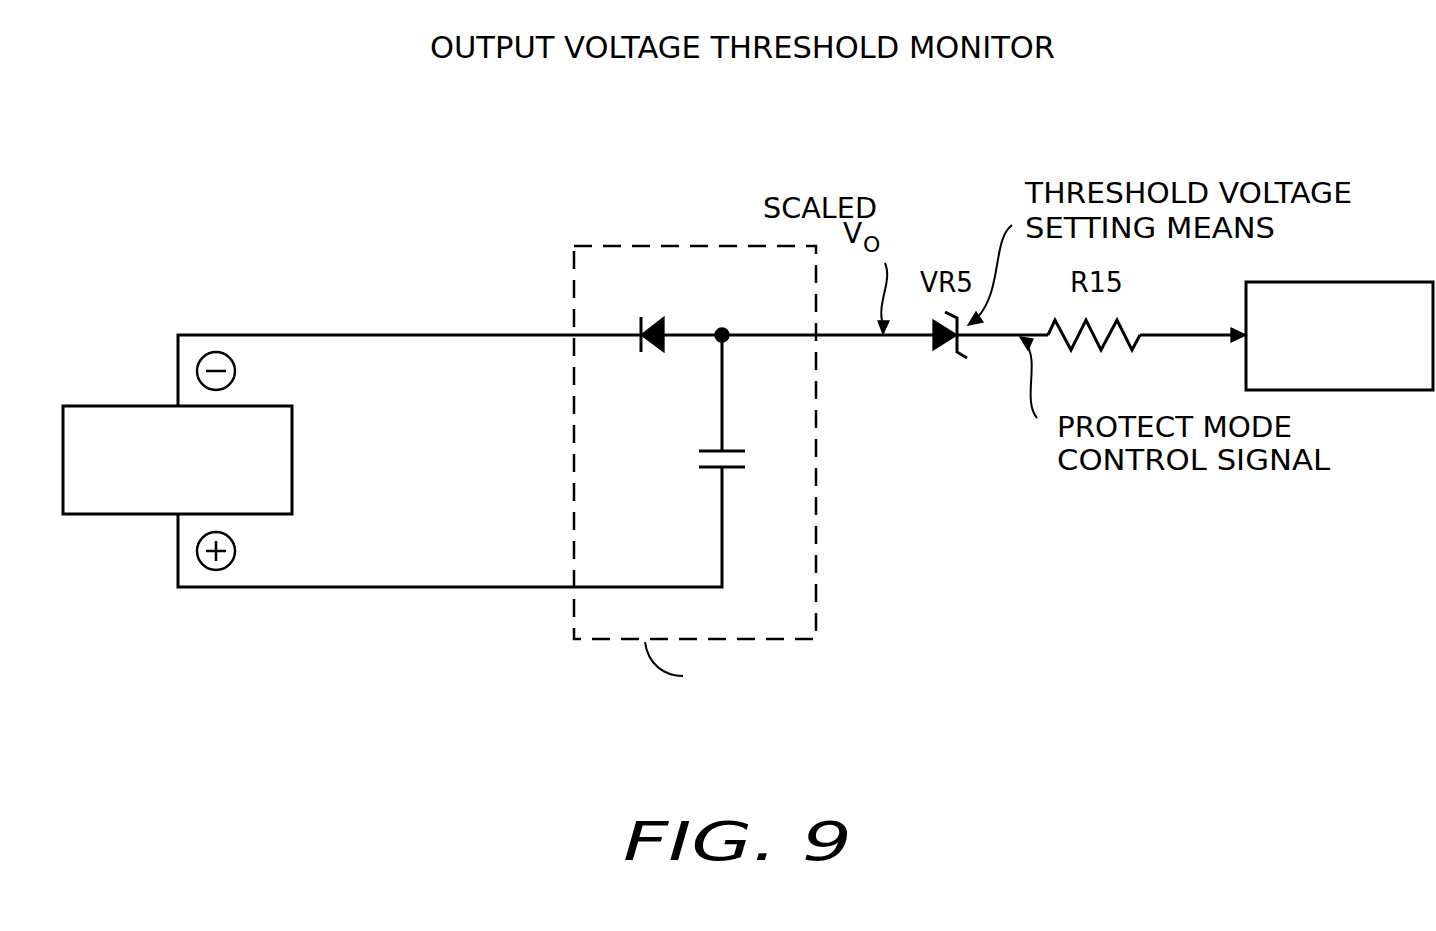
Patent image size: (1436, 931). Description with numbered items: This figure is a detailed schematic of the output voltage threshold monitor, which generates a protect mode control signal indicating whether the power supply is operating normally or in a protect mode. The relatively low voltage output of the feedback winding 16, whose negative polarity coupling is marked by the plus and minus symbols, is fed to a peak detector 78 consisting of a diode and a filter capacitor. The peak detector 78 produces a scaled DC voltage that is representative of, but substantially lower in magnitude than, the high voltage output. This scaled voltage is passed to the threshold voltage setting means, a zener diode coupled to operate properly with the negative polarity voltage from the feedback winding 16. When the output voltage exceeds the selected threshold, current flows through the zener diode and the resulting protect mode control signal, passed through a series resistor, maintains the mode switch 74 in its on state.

The feedback winding 16 is at (141, 405).
The mode switch 74 is at (1399, 282).
The peak detector 78 is at (813, 588).